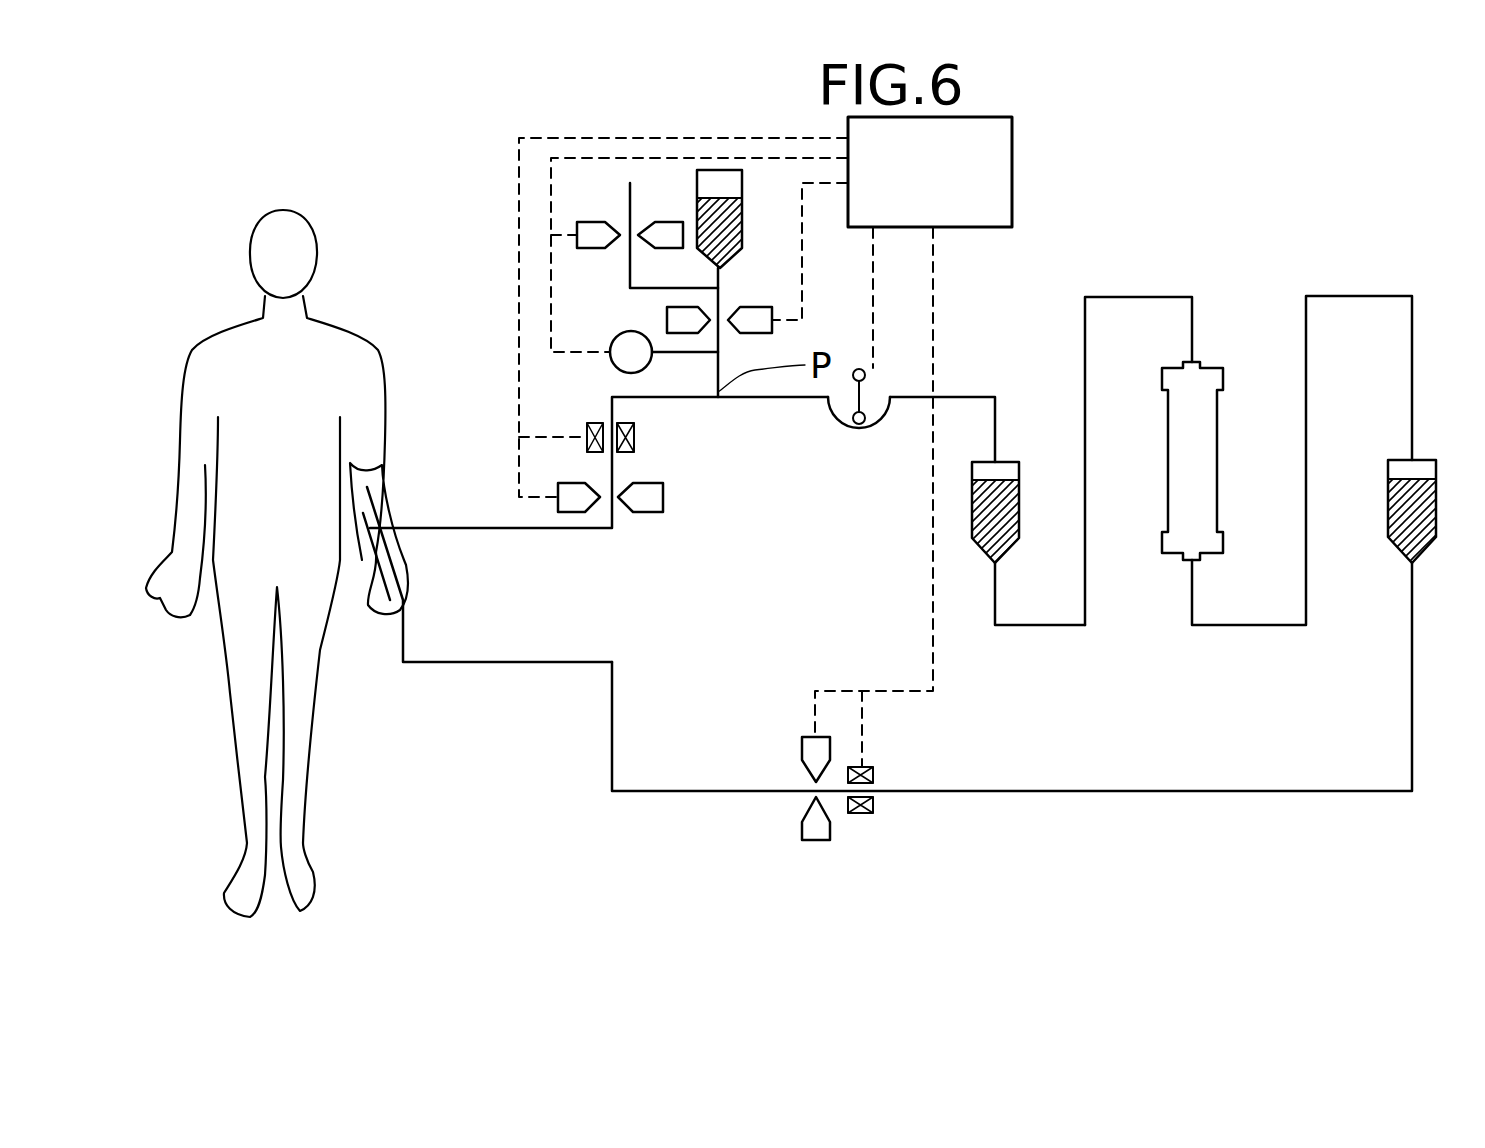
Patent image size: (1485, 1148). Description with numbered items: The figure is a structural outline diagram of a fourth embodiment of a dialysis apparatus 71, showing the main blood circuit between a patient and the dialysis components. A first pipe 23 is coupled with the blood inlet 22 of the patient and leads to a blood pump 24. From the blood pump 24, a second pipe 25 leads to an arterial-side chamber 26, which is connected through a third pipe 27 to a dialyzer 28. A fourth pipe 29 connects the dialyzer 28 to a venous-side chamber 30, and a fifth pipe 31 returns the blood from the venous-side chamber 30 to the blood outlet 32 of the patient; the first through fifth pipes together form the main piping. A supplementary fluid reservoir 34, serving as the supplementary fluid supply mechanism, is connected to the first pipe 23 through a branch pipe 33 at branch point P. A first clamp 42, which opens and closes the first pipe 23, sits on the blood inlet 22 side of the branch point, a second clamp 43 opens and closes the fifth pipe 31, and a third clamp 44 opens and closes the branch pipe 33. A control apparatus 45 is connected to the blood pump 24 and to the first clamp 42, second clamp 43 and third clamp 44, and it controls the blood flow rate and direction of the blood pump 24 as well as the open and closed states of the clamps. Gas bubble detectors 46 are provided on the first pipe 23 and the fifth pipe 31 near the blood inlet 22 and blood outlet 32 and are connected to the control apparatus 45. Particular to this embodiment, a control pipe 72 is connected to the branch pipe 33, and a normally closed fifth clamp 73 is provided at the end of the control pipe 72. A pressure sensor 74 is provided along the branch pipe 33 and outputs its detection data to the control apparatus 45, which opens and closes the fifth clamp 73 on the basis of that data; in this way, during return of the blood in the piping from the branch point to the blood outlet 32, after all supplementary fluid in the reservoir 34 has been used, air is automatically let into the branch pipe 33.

The blood inlet 22 is at (370, 490).
The first pipe 23 is at (495, 528).
The blood pump 24 is at (881, 388).
The second pipe 25 is at (968, 397).
The arterial-side chamber 26 is at (968, 548).
The third pipe 27 is at (1085, 488).
The dialyzer 28 is at (1225, 492).
The fourth pipe 29 is at (1308, 462).
The venous-side chamber 30 is at (1436, 492).
The fifth pipe 31 is at (1215, 793).
The blood outlet 32 is at (392, 550).
The branch pipe 33 is at (718, 343).
The supplementary fluid reservoir 34 is at (697, 200).
The first clamp 42 is at (665, 497).
The second clamp 43 is at (802, 827).
The third clamp 44 is at (667, 312).
The control apparatus 45 is at (1012, 167).
The gas bubble detector 46 is at (634, 437).
The dialysis apparatus 71 is at (1058, 265).
The control pipe 72 is at (630, 262).
The fifth clamp 73 is at (590, 222).
The pressure sensor 74 is at (615, 368).